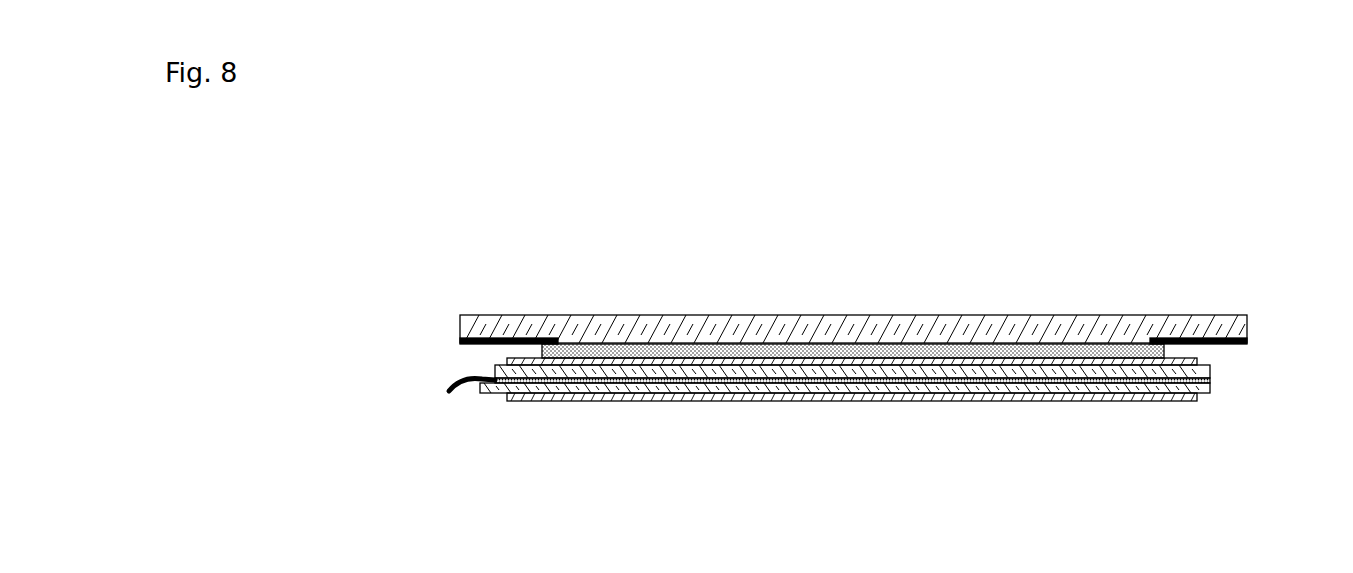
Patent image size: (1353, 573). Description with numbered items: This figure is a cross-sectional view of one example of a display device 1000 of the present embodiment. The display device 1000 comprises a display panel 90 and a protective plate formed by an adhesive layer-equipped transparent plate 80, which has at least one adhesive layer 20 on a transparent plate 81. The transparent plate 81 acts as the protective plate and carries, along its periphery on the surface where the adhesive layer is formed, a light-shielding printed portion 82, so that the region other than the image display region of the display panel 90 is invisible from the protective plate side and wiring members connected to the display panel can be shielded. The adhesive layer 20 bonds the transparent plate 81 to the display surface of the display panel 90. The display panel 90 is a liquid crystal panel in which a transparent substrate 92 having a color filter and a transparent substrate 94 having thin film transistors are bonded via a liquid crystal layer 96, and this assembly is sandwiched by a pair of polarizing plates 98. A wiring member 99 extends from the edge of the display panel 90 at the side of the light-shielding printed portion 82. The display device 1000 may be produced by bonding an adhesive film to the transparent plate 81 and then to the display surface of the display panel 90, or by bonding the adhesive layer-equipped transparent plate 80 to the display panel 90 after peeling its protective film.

The display device 1000 is at (808, 292).
The adhesive layer-equipped transparent plate 80 is at (1015, 310).
The transparent plate 81 is at (1240, 338).
The light-shielding printed portion 82 is at (460, 342).
The adhesive layer 20 is at (930, 353).
The display panel 90 is at (1292, 352).
The polarizing plates 98 is at (1197, 360).
The transparent substrate having a color filter 92 is at (1210, 368).
The liquid crystal layer 96 is at (1210, 380).
The transparent substrate having TFT 94 is at (1210, 388).
The flexible wiring 99 is at (464, 393).